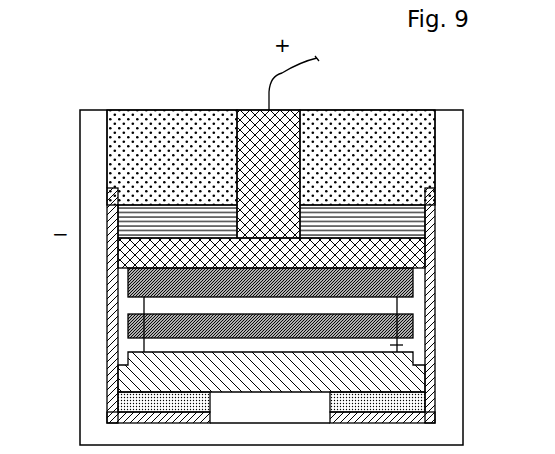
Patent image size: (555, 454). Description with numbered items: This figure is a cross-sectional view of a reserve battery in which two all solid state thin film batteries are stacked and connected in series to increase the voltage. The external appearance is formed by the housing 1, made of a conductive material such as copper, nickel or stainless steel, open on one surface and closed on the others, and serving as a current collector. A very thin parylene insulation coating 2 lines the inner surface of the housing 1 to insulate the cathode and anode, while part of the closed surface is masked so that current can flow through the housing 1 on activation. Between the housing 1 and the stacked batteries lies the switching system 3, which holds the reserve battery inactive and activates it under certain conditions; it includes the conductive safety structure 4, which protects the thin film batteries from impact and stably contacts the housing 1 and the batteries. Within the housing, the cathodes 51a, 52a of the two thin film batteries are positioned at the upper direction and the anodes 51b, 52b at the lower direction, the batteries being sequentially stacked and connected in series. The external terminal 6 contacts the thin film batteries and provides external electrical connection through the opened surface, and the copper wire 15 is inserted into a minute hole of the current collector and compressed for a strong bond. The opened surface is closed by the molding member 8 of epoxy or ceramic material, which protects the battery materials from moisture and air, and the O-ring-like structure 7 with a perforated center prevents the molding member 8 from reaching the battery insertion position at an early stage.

The housing 1 is at (452, 430).
The insulation coating 2 is at (421, 389).
The switching system 3 is at (418, 401).
The safety structure 4 is at (410, 363).
The external terminal 6 is at (408, 253).
The structure having a perforated center 7 is at (407, 218).
The molding member 8 is at (417, 152).
The copper wire 15 is at (282, 73).
The cathode of the first all solid state thin film battery 51a is at (405, 326).
The anode of the first all solid state thin film battery 51b is at (400, 346).
The cathode of the second all solid state thin film battery 52a is at (140, 286).
The anode of the second all solid state thin film battery 52b is at (144, 303).